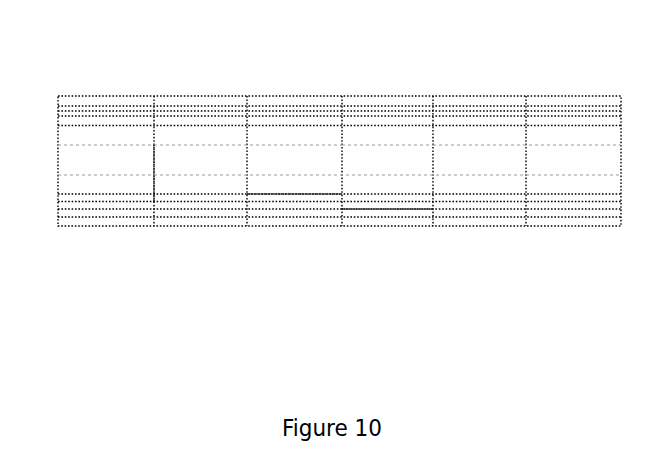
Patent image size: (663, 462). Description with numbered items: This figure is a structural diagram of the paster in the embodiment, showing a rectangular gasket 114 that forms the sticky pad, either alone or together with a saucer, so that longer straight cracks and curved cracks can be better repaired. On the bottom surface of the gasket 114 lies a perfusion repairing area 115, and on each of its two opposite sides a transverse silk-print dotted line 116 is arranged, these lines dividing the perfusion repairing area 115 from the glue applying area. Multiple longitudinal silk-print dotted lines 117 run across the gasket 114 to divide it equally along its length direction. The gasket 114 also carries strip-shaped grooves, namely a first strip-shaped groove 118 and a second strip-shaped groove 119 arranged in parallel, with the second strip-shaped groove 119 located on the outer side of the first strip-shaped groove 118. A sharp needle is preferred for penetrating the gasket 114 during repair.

The gasket 114 is at (281, 96).
The perfusion repairing area 115 is at (385, 160).
The transverse silk-print dotted line 116 is at (493, 146).
The longitudinal silk-print dotted line 117 is at (152, 182).
The first strip-shaped groove 118 is at (281, 196).
The second strip-shaped groove 119 is at (388, 212).